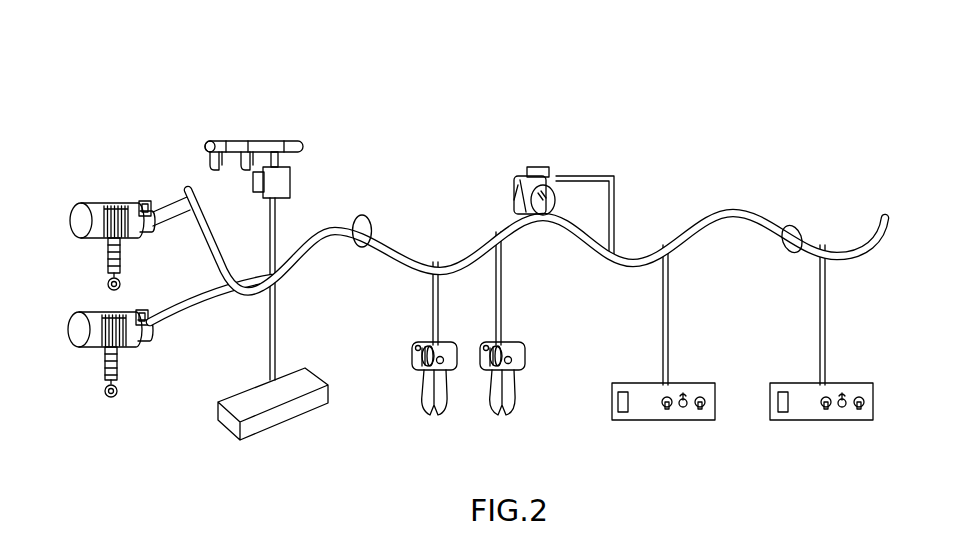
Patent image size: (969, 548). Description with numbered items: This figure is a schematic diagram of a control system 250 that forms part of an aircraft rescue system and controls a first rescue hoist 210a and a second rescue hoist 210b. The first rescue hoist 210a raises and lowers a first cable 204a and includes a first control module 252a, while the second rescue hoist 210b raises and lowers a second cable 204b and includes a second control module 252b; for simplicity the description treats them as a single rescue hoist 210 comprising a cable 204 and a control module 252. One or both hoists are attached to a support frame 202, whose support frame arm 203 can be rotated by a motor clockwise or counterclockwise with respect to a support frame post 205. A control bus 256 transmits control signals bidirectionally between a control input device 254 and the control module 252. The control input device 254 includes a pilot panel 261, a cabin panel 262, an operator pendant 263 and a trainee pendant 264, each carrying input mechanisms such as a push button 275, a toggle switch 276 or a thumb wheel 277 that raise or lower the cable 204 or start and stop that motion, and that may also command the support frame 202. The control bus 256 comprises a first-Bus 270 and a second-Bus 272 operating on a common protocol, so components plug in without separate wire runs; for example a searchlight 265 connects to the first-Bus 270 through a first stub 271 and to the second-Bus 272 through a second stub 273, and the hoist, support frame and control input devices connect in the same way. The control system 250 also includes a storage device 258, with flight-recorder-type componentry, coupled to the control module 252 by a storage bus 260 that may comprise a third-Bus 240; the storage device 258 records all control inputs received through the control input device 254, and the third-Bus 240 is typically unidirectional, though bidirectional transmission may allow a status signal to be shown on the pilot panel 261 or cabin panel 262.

The support frame 202 is at (278, 146).
The support frame arm 203 is at (236, 141).
The cable 204 is at (112, 220).
The first cable 204a is at (120, 205).
The second cable 204b is at (95, 310).
The support frame post 205 is at (284, 157).
The rescue hoist 210 is at (101, 264).
The first rescue hoist 210a is at (107, 210).
The second rescue hoist 210b is at (106, 334).
The third-Bus 240 is at (536, 284).
The control system 250 is at (450, 84).
The control module 252 is at (152, 173).
The first control module 252a is at (150, 203).
The second control module 252b is at (146, 312).
The control input device 254 is at (637, 395).
The control bus 256 is at (366, 216).
The storage device 258 is at (227, 422).
The storage bus 260 is at (213, 303).
The pilot panel 261 is at (844, 423).
The cabin panel 262 is at (716, 405).
The operator pendant 263 is at (404, 383).
The trainee pendant 264 is at (513, 393).
The searchlight 265 is at (518, 175).
The first-Bus 270 is at (551, 284).
The first stub 271 is at (268, 235).
The second-Bus 272 is at (405, 245).
The second stub 273 is at (166, 212).
The push button 275 is at (485, 380).
The toggle switch 276 is at (826, 409).
The thumb wheel 277 is at (420, 362).